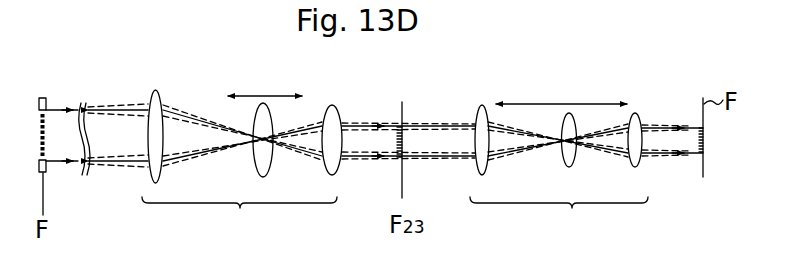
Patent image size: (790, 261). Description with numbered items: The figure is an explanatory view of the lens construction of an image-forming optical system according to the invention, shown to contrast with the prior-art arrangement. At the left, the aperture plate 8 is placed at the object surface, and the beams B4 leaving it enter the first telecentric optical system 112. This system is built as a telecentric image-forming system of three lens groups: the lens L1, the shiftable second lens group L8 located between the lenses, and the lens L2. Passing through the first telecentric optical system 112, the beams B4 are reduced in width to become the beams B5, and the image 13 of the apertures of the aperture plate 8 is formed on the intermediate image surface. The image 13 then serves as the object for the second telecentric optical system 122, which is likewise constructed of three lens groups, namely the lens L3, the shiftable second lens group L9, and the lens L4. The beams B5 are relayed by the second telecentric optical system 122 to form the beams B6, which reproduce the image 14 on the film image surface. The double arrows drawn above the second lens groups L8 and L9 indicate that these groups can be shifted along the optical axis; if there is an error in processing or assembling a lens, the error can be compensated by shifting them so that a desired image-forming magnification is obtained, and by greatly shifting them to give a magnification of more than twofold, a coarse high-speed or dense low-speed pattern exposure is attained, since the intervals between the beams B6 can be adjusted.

The aperture plate 8 is at (43, 97).
The beams B4 is at (104, 108).
The lens L1 is at (155, 90).
The second lens group L8 is at (256, 160).
The lens L2 is at (334, 105).
The first telecentric optical system 112 is at (239, 220).
The image 13 is at (397, 156).
The beams B5 is at (425, 124).
The lens L3 is at (484, 105).
The second lens group L9 is at (577, 163).
The lens L4 is at (636, 113).
The beams B6 is at (670, 125).
The image 14 is at (696, 141).
The second telecentric optical system 122 is at (559, 218).